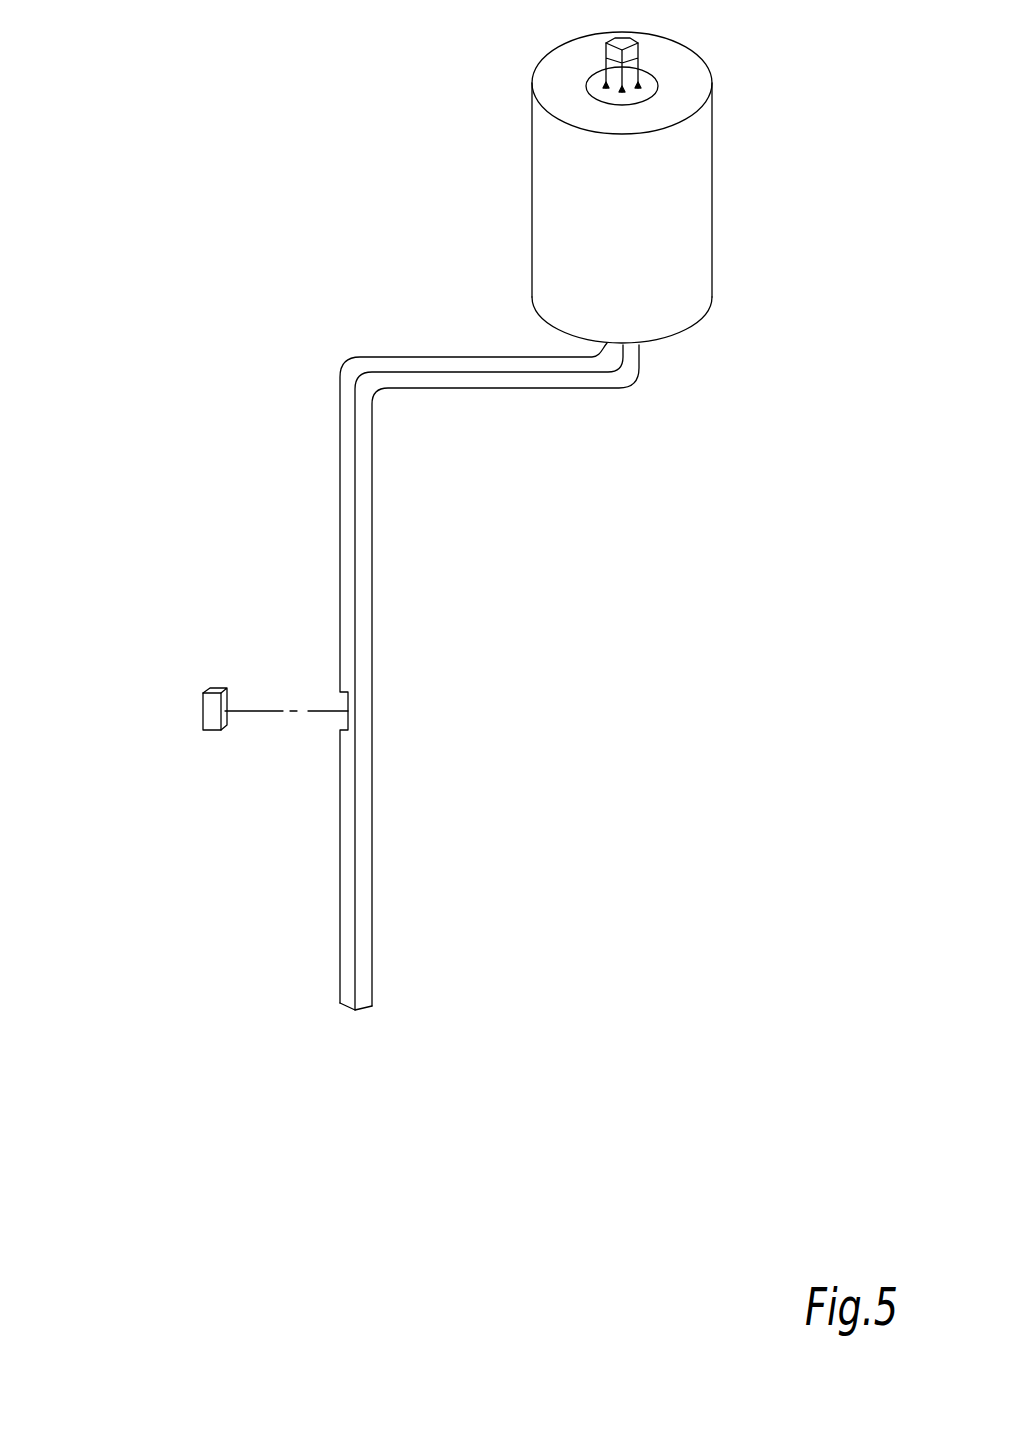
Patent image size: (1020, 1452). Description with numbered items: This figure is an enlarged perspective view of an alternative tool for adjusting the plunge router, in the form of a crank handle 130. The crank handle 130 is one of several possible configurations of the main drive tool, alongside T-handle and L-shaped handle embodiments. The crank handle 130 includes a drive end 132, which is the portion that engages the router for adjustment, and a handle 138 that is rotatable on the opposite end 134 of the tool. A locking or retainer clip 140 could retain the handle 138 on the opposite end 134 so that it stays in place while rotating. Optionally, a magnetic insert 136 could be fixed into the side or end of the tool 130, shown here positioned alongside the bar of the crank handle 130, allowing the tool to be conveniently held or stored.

The crank handle 130 is at (372, 802).
The drive end 132 is at (372, 897).
The opposite end 134 is at (632, 67).
The magnetic insert 136 is at (203, 709).
The handle 138 is at (700, 168).
The locking or retainer clip 140 is at (595, 82).